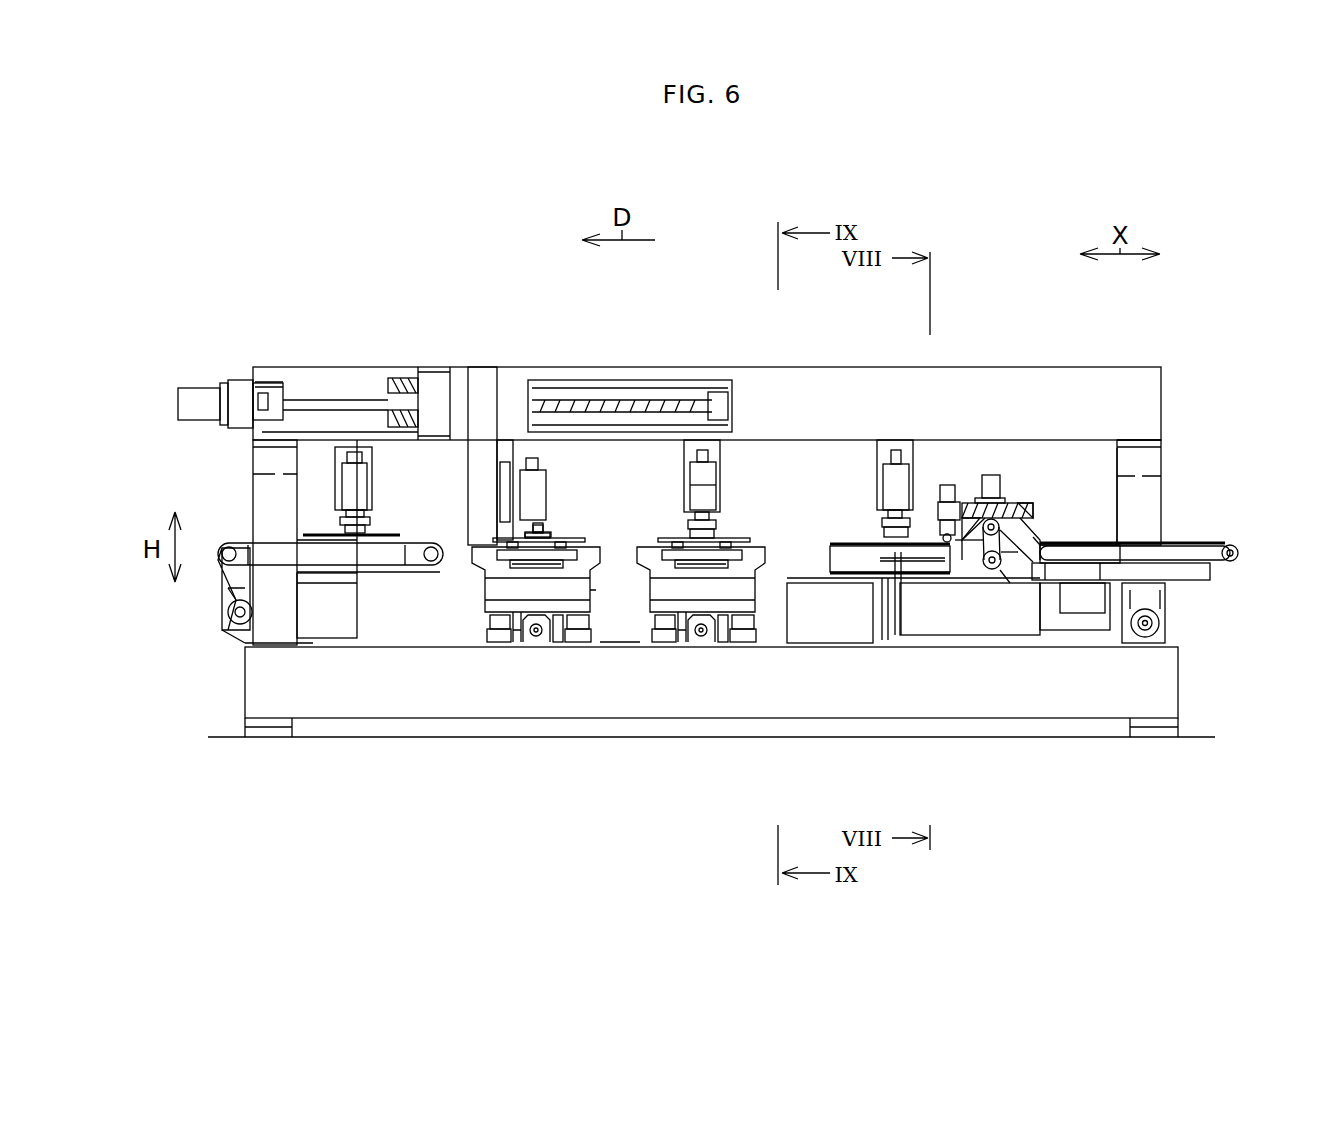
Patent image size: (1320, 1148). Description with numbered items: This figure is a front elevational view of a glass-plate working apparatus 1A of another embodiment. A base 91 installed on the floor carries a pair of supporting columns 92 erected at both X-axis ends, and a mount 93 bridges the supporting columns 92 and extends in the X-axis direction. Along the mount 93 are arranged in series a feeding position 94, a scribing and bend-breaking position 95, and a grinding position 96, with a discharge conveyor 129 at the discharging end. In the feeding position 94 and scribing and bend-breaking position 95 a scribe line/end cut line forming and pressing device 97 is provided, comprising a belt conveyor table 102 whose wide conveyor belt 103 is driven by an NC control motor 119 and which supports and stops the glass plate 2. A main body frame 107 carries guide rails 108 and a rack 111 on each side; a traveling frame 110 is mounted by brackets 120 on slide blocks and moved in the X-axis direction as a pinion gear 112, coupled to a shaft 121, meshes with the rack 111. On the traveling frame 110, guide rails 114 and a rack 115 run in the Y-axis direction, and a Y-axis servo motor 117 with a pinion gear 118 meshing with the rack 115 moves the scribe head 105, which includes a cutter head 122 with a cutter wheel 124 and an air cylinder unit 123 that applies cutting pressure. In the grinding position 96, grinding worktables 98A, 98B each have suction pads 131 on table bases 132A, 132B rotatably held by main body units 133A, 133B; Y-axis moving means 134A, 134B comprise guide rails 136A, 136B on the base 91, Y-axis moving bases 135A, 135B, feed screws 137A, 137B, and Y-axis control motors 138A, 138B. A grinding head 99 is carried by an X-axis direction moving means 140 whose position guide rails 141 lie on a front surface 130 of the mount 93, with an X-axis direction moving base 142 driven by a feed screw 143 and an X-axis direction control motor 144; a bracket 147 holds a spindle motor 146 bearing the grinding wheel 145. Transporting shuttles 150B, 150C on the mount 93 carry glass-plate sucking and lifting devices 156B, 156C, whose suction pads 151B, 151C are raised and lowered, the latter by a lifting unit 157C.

The glass-plate working apparatus 1A is at (1145, 330).
The glass plate 2 is at (393, 538).
The base 91 is at (1125, 680).
The supporting columns 92 is at (275, 508).
The mount 93 is at (617, 383).
The feeding position 94 is at (1180, 555).
The scribing and bend-breaking position 95 is at (935, 605).
The grinding position 96 is at (620, 625).
The scribe line/end cut line forming and pressing device 97 is at (1085, 600).
The grinding worktable 98A is at (703, 640).
The grinding worktable 98B is at (508, 567).
The grinding head 99 is at (498, 460).
The belt conveyor table 102 is at (1085, 576).
The conveyor belt 103 is at (1045, 560).
The scribe head 105 is at (955, 520).
The main body frame 107 is at (960, 562).
The guide rails 108 is at (832, 600).
The traveling frame 110 is at (1000, 500).
The rack 111 is at (886, 578).
The pinion gear 112 is at (1003, 592).
The guide rails 114 is at (1033, 518).
The rack 115 is at (1000, 503).
The Y-axis servo motor 117 is at (1025, 520).
The pinion gear 118 is at (1025, 505).
The NC control motor 119 is at (1152, 626).
The brackets 120 is at (1000, 566).
The shaft 121 is at (1030, 562).
The cutter head 122 is at (952, 500).
The air cylinder unit 123 is at (990, 475).
The cutter wheel 124 is at (947, 503).
The discharge conveyor 129 is at (327, 543).
The front surface 130 is at (300, 383).
The suction pads 131 is at (505, 546).
The table base 132A is at (835, 565).
The table base 132B is at (507, 597).
The main body unit 133A is at (660, 640).
The main body unit 133B is at (578, 615).
The Y-axis moving means 134A is at (742, 628).
The Y-axis moving means 134B is at (536, 640).
The Y-axis moving base 135A is at (745, 600).
The Y-axis moving base 135B is at (492, 632).
The guide rails 136A is at (680, 643).
The guide rails 136B is at (510, 643).
The feed screw 137A is at (727, 643).
The feed screw 137B is at (556, 643).
The Y-axis control motor 138A is at (712, 643).
The Y-axis control motor 138B is at (572, 600).
The X-axis direction moving means 140 is at (533, 390).
The position guide rails 141 is at (390, 420).
The X-axis direction moving base 142 is at (423, 387).
The feed screw 143 is at (342, 407).
The X-axis direction control motor 144 is at (206, 400).
The grinding wheel 145 is at (547, 536).
The spindle motor 146 is at (538, 497).
The bracket 147 is at (471, 428).
The transporting shuttle 150B is at (890, 437).
The transporting shuttle 150C is at (722, 452).
The suction pad 151B is at (868, 530).
The suction pad 151C is at (722, 530).
The glass-plate sucking and lifting device 156B is at (877, 483).
The glass-plate sucking and lifting device 156C is at (692, 480).
The lifting unit 157C is at (714, 478).